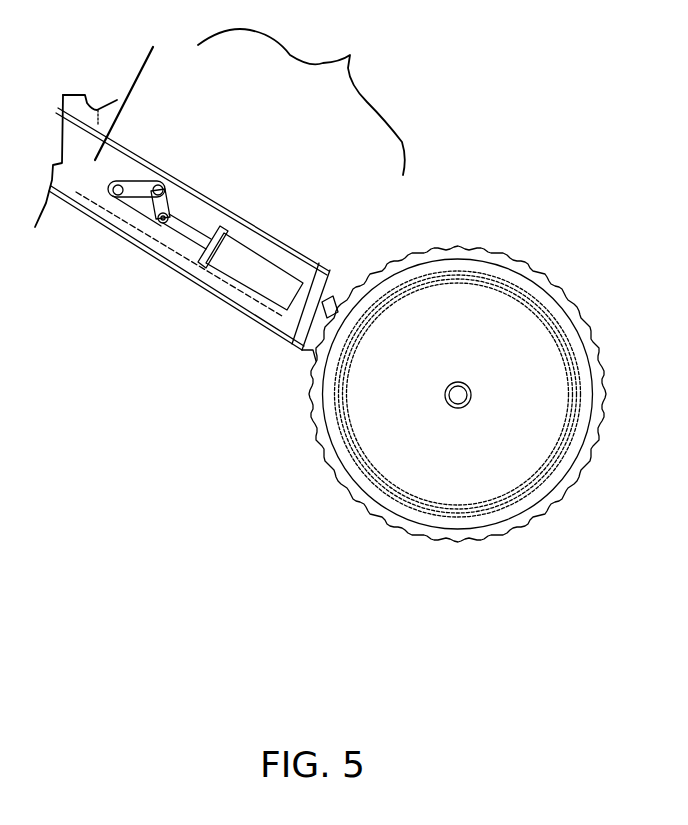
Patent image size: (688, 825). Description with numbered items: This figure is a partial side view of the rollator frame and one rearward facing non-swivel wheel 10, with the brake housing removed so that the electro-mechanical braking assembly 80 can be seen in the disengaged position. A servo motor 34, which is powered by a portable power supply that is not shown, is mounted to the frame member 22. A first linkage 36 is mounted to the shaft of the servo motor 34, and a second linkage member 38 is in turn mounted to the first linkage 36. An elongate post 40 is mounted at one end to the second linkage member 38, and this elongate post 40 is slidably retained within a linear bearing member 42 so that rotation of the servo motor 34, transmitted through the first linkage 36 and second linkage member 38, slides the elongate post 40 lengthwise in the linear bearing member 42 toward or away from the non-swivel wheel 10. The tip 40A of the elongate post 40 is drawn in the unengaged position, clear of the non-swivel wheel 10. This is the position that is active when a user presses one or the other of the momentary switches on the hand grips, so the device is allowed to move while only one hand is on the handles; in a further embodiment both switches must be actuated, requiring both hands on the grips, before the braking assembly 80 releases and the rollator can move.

The non-swivel wheel 10 is at (583, 267).
The frame member 22 is at (139, 55).
The servo motor 34 is at (115, 180).
The first linkage 36 is at (140, 183).
The second linkage member 38 is at (167, 197).
The elongate post 40 is at (192, 233).
The tip of post 40A is at (332, 310).
The linear bearing member 42 is at (250, 267).
The electro-mechanical braking assembly 80 is at (301, 100).